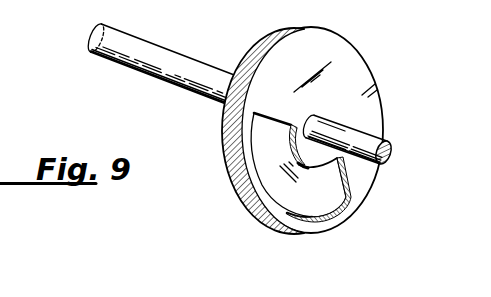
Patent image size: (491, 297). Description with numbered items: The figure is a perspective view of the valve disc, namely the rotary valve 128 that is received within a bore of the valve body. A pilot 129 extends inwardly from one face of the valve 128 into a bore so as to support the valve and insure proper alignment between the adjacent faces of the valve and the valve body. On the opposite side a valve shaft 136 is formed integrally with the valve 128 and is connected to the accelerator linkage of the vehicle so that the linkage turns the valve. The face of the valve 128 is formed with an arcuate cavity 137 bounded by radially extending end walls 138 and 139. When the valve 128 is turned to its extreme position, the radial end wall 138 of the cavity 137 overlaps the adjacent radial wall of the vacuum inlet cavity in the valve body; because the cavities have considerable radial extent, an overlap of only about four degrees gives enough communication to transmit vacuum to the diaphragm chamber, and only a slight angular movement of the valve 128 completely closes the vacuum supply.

The rotary valve 128 is at (333, 47).
The pilot 129 is at (363, 137).
The valve shaft 136 is at (161, 52).
The arcuate cavity 137 is at (263, 168).
The radial end wall 138 is at (368, 175).
The radial end wall 139 is at (270, 119).